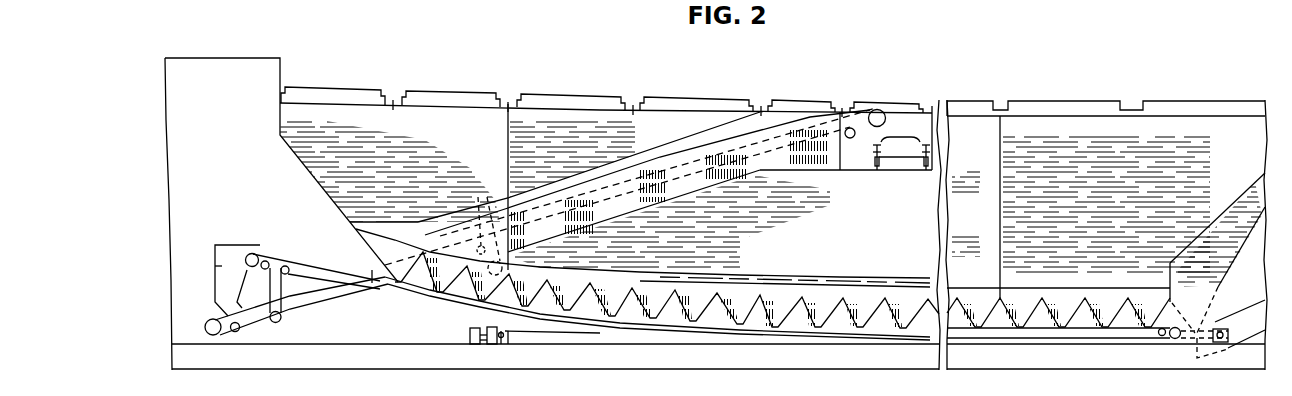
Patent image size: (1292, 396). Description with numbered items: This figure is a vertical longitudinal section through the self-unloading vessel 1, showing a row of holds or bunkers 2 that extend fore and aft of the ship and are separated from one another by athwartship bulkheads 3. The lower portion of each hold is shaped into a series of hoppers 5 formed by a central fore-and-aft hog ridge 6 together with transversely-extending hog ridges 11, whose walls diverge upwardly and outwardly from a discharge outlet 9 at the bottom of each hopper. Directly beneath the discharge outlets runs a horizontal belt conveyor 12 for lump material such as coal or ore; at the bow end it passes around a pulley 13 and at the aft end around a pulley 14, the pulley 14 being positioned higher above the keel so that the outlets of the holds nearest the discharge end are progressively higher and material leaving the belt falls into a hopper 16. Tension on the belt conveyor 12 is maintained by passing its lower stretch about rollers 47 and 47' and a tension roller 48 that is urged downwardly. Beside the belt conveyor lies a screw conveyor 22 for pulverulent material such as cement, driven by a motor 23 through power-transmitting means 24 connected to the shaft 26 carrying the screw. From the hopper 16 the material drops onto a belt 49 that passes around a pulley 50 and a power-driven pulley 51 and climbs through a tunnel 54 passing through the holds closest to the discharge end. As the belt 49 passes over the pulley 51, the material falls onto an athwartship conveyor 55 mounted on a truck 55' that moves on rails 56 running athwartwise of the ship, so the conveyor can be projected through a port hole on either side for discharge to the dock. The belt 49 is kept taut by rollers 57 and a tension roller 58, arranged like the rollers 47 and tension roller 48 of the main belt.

The vessel 1 is at (1012, 56).
The holds or bunkers 2 is at (449, 118).
The athwartship bulkheads 3 is at (507, 158).
The hoppers 5 is at (818, 298).
The hog ridge 6 is at (893, 285).
The discharge outlet 9 is at (612, 318).
The transversely-extending hog ridges 11 is at (766, 292).
The belt conveyor 12 is at (424, 304).
The pulleys 13 is at (1174, 340).
The pulleys 14 is at (262, 245).
The hopper 16 is at (215, 270).
The screw conveyor 22 is at (546, 338).
The motors 23 is at (470, 330).
The power-transmitting means 24 is at (493, 345).
The shafts 26 is at (501, 344).
The rollers 47 is at (283, 272).
The rollers 47' is at (308, 258).
The tension roller 48 is at (277, 322).
The belt 49 is at (372, 284).
The pulley 50 is at (205, 327).
The pulley 51 is at (880, 109).
The tunnel 54 is at (718, 184).
The athwartship conveyor 55 is at (901, 106).
The truck 55' is at (879, 173).
The rails 56 is at (924, 172).
The rollers 57 is at (484, 218).
The tension roller 58 is at (498, 277).